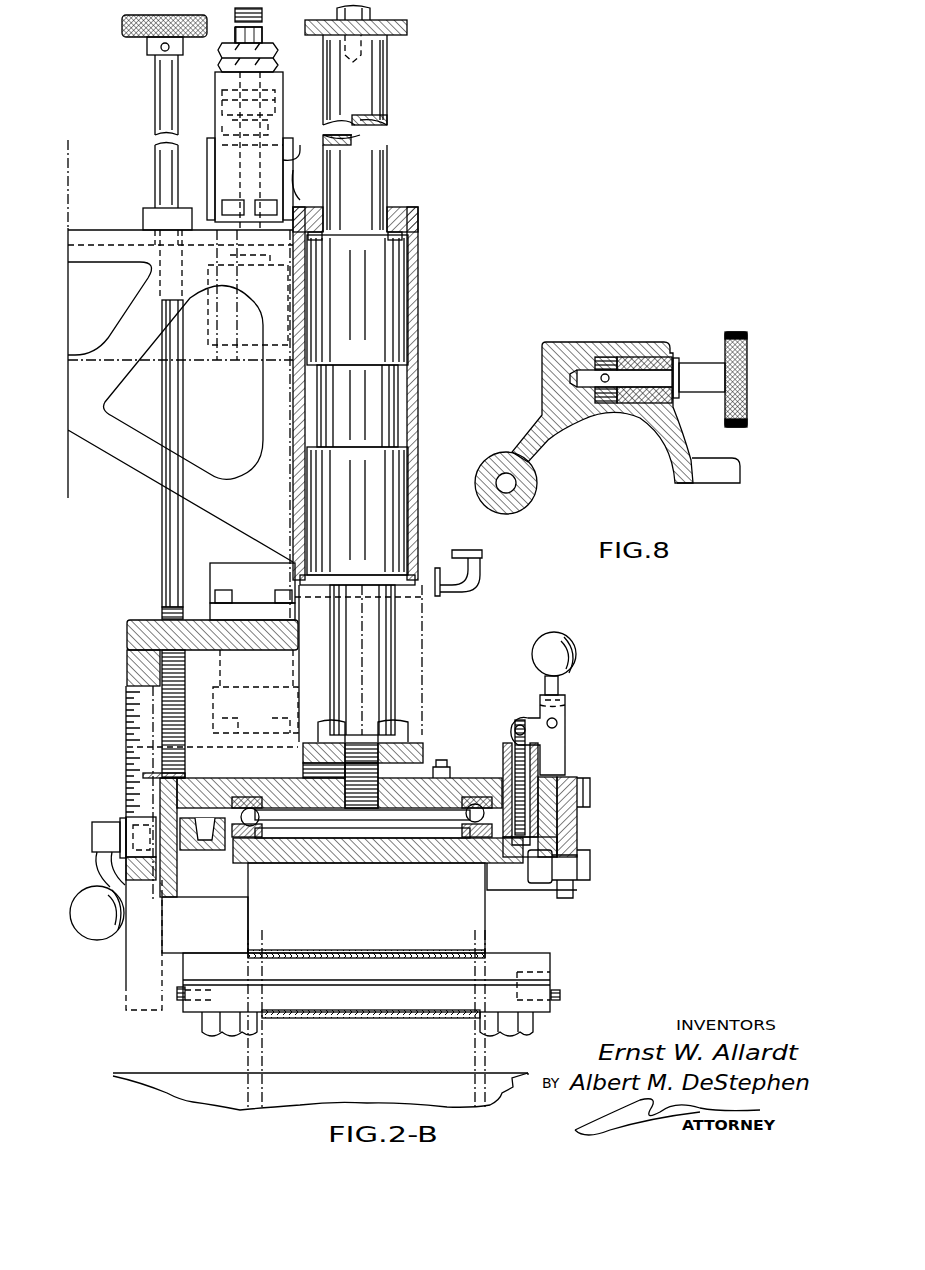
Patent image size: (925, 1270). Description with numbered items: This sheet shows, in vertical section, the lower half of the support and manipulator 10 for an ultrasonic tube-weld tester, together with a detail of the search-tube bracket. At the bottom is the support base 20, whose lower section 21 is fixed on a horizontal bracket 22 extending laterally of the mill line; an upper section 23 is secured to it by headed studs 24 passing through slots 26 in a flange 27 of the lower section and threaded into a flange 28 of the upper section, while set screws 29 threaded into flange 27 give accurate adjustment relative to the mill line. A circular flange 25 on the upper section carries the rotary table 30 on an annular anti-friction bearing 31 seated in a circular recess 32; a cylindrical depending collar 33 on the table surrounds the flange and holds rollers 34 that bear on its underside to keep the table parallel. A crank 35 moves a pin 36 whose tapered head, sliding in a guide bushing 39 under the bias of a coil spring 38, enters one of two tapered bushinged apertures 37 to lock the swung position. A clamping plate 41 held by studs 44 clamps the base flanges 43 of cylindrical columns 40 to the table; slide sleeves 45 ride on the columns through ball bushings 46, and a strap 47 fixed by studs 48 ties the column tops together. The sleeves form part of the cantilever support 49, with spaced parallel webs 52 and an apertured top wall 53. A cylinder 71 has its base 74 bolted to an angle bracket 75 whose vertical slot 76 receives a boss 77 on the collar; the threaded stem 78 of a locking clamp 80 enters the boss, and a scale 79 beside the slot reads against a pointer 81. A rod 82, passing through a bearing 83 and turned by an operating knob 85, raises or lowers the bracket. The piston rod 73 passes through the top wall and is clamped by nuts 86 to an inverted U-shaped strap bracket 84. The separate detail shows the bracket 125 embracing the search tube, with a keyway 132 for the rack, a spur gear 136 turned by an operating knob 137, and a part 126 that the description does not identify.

In FIG. 2-B, the support and manipulator 10 is at (442, 352).
In FIG. 2-B, the support base 20 is at (378, 1050).
In FIG. 2-B, the lower section 21 is at (290, 1043).
In FIG. 2-B, the horizontal bracket 22 is at (495, 1073).
In FIG. 2-B, the upper section 23 is at (378, 927).
In FIG. 2-B, the headed studs 24 is at (530, 1022).
In FIG. 2-B, the circular flange 25 is at (198, 855).
In FIG. 2-B, the slots 26 is at (550, 970).
In FIG. 2-B, the flange 27 is at (195, 1010).
In FIG. 2-B, the flange 28 is at (548, 965).
In FIG. 2-B, the set screws 29 is at (560, 997).
In FIG. 2-B, the rotary table 30 is at (215, 792).
In FIG. 2-B, the annular anti-friction bearing 31 is at (270, 790).
In FIG. 2-B, the circular recess 32 is at (342, 848).
In FIG. 2-B, the cylindrical depending collar 33 is at (578, 825).
In FIG. 2-B, the rollers 34 is at (540, 875).
In FIG. 2-B, the crank 35 is at (558, 648).
In FIG. 2-B, the pin 36 is at (548, 785).
In FIG. 2-B, the tapered bushinged apertures 37 is at (212, 840).
In FIG. 2-B, the coil spring 38 is at (507, 745).
In FIG. 2-B, the guide bushing 39 is at (530, 755).
In FIG. 2-B, the cylindrical columns 40 is at (375, 668).
In FIG. 2-B, the clamping plate 41 is at (410, 728).
In FIG. 2-B, the base flanges 43 is at (425, 770).
In FIG. 2-B, the studs 44 is at (425, 745).
In FIG. 2-B, the slide sleeves 45 is at (418, 425).
In FIG. 2-B, the ball bushings 46 is at (395, 280).
In FIG. 2-B, the strap 47 is at (405, 32).
In FIG. 2-B, the studs 48 is at (372, 12).
In FIG. 2-B, the cantilever support 49 is at (83, 210).
In FIG. 2-B, the spaced parallel webs 52 is at (84, 388).
In FIG. 2-B, the apertured top wall 53 is at (108, 262).
In FIG. 2-B, the cylinder 71 is at (206, 428).
In FIG. 2-B, the piston rod 73 is at (263, 15).
In FIG. 2-B, the base 74 is at (222, 580).
In FIG. 2-B, the angle bracket 75 is at (140, 630).
In FIG. 2-B, the vertical slot 76 is at (130, 668).
In FIG. 2-B, the boss 77 is at (148, 832).
In FIG. 2-B, the threaded stem 78 is at (108, 818).
In FIG. 2-B, the scale 79 is at (126, 728).
In FIG. 2-B, the locking clamp 80 is at (88, 908).
In FIG. 2-B, the pointer 81 is at (150, 777).
In FIG. 2-B, the rod 82 is at (170, 536).
In FIG. 2-B, the bearing 83 is at (150, 218).
In FIG. 2-B, the inverted U-shaped strap bracket 84 is at (277, 131).
In FIG. 2-B, the operating knob 85 is at (125, 30).
In FIG. 2-B, the nuts 86 is at (273, 50).
In FIG. 8, the bracket 125 is at (560, 342).
In FIG. 8, the foot 126 is at (725, 475).
In FIG. 8, the keyway 132 is at (617, 405).
In FIG. 8, the spur gear 136 is at (597, 403).
In FIG. 8, the operating knob 137 is at (740, 332).